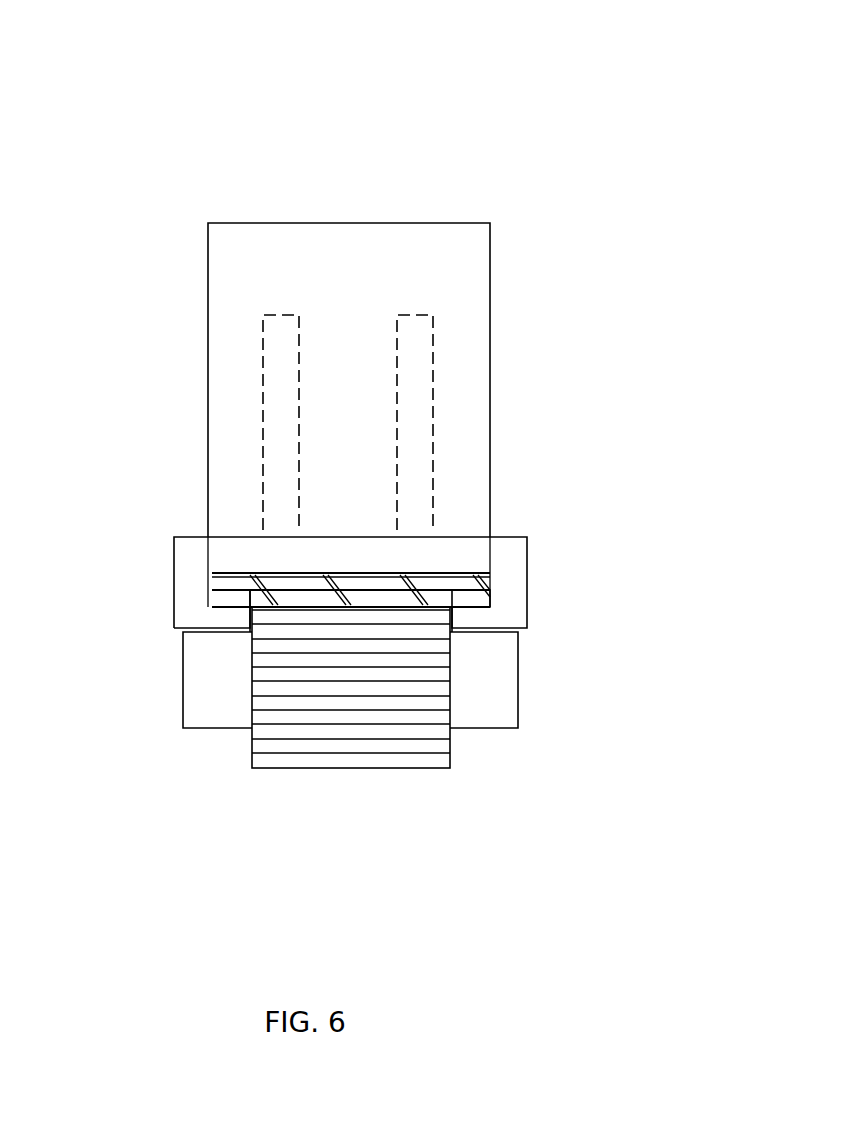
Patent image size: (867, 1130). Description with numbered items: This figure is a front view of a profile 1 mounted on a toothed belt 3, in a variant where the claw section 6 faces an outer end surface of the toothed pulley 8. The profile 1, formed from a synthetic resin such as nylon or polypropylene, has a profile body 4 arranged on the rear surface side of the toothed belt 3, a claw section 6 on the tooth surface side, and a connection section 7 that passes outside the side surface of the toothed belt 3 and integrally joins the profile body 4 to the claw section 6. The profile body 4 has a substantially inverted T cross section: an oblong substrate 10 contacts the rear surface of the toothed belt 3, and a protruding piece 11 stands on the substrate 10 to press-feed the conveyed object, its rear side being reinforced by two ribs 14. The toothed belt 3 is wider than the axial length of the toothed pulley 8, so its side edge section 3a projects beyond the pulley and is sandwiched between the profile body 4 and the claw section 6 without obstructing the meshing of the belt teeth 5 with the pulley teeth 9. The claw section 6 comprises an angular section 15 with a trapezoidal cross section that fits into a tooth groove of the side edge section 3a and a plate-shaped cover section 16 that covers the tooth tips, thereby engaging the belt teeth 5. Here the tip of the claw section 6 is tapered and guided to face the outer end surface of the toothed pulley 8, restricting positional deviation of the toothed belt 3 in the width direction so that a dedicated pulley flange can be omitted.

The profile 1 is at (482, 137).
The toothed belt 3 is at (395, 580).
The side edge section 3a is at (466, 578).
The profile body 4 is at (190, 388).
The belt teeth 5 is at (406, 598).
The claw section 6 is at (490, 618).
The connection section 7 is at (518, 578).
The toothed pulley 8 is at (302, 777).
The pulley teeth 9 is at (378, 727).
The substrate 10 is at (347, 550).
The protruding piece 11 is at (327, 268).
The ribs 14 is at (278, 432).
The angular section 15 is at (218, 605).
The cover section 16 is at (230, 597).